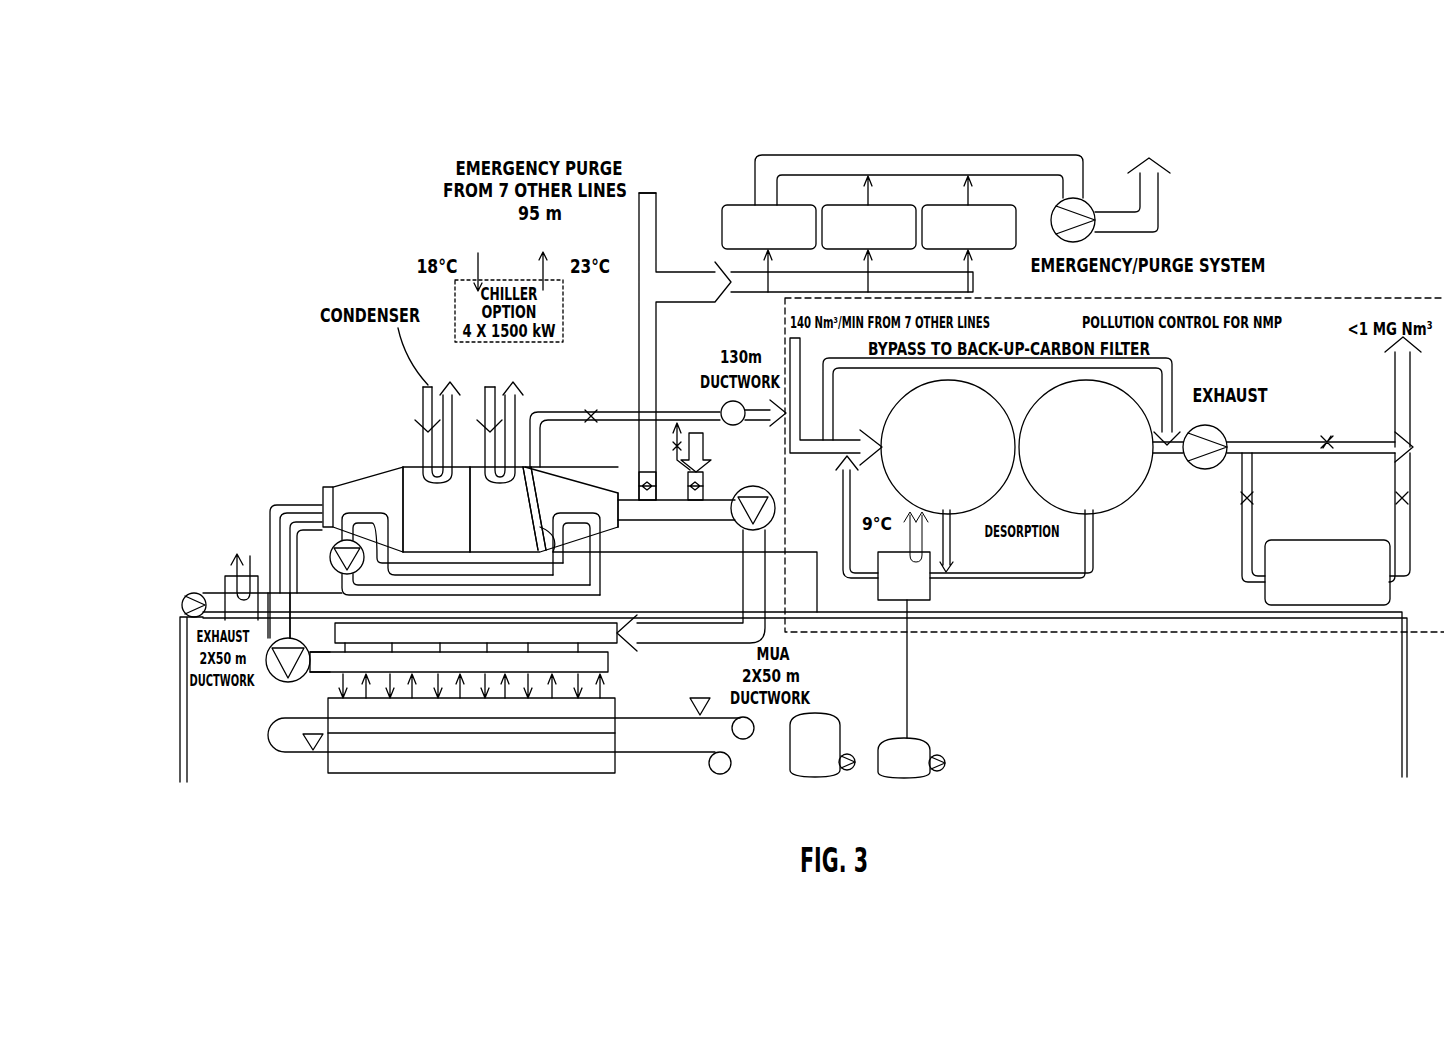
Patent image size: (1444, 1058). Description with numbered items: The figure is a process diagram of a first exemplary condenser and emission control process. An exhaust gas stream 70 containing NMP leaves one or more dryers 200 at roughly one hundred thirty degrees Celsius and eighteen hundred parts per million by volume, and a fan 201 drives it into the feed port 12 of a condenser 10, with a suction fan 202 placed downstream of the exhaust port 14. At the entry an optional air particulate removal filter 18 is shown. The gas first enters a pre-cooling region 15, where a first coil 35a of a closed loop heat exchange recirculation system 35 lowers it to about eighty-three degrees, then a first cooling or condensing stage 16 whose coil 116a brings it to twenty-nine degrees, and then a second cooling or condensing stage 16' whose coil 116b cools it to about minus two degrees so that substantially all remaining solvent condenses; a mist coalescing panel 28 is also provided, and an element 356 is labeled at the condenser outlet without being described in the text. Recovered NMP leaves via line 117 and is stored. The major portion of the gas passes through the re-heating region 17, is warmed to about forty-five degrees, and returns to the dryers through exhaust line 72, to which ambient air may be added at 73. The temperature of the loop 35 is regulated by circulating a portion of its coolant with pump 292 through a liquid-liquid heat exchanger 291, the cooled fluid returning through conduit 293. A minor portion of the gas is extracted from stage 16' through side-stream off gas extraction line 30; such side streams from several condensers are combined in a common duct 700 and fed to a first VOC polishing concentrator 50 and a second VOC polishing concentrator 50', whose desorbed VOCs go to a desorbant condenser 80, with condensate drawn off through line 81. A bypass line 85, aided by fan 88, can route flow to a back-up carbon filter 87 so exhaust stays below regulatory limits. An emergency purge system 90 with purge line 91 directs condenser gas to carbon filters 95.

The condenser 10 is at (356, 455).
The feed port 12 is at (320, 512).
The exhaust port 14 is at (618, 497).
The pre-cooling region 15 is at (316, 487).
The first cooling or condensing stage 16 is at (422, 486).
The second cooling or condensing stage 16' is at (493, 419).
The re-heating region 17 is at (564, 456).
The air particulate removal filter 18 is at (320, 505).
The mist coalescing panel 28 is at (560, 552).
The side-stream off gas extraction line 30 is at (666, 410).
The closed loop heat exchange recirculation system 35 is at (576, 554).
The first coil 35a is at (340, 522).
The first VOC polishing concentrator 50 is at (931, 444).
The second VOC polishing concentrator 50' is at (1076, 444).
The exhaust gas stream 70 is at (292, 583).
The exhaust line 72 is at (742, 578).
The ambient air addition 73 is at (706, 483).
The desorbant condenser 80 is at (932, 592).
The condensate line 81 is at (910, 648).
The bypass line 85 is at (1168, 352).
The back-up carbon filter 87 is at (1350, 540).
The fan 88 is at (1230, 428).
The emergency purge system 90 is at (668, 158).
The purge line 91 is at (638, 345).
The carbon filter 95 is at (735, 205).
The coil 116a is at (423, 423).
The coil 116b is at (512, 420).
The NMP recovery line 117 is at (825, 648).
The dryers 200 is at (355, 778).
The fan 201 is at (283, 680).
The suction fan 202 is at (766, 488).
The liquid-liquid heat exchanger 291 is at (225, 578).
The pump 292 is at (182, 605).
The conduit 293 is at (603, 600).
The outlet section 356 is at (605, 522).
The common duct 700 is at (790, 340).